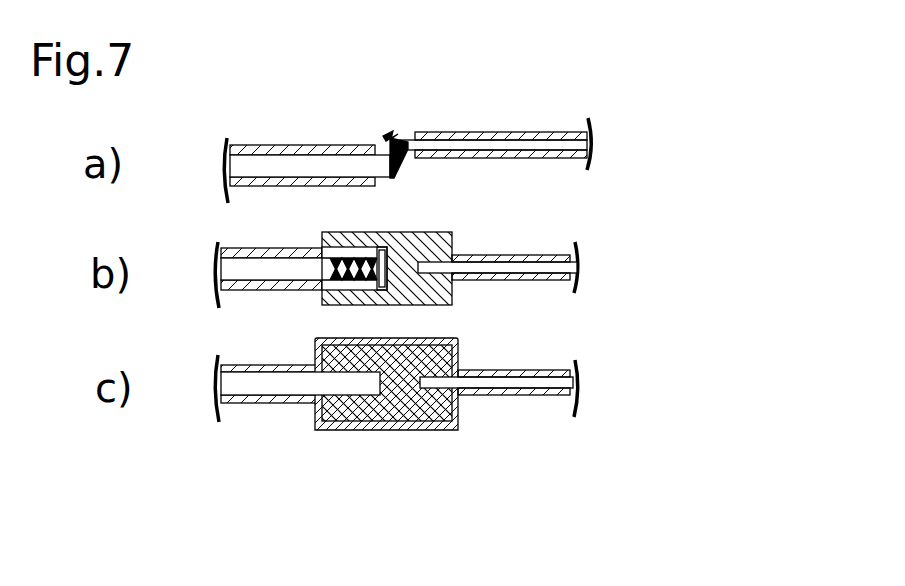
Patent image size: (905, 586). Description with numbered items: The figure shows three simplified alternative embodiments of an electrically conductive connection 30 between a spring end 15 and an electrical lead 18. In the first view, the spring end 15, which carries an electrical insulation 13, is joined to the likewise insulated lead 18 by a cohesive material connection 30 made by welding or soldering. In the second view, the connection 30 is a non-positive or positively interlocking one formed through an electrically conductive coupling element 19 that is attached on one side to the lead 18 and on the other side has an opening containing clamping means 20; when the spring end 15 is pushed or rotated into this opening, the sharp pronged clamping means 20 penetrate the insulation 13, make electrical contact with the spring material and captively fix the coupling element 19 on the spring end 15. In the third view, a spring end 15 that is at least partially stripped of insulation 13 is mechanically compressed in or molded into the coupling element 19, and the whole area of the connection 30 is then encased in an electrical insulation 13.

The electrical insulation 13 is at (296, 144).
The spring end 15 is at (338, 165).
The electrical lead 18 is at (544, 122).
The coupling element 19 is at (420, 231).
The clamping means 20 is at (338, 268).
The electrical connection 30 is at (392, 132).